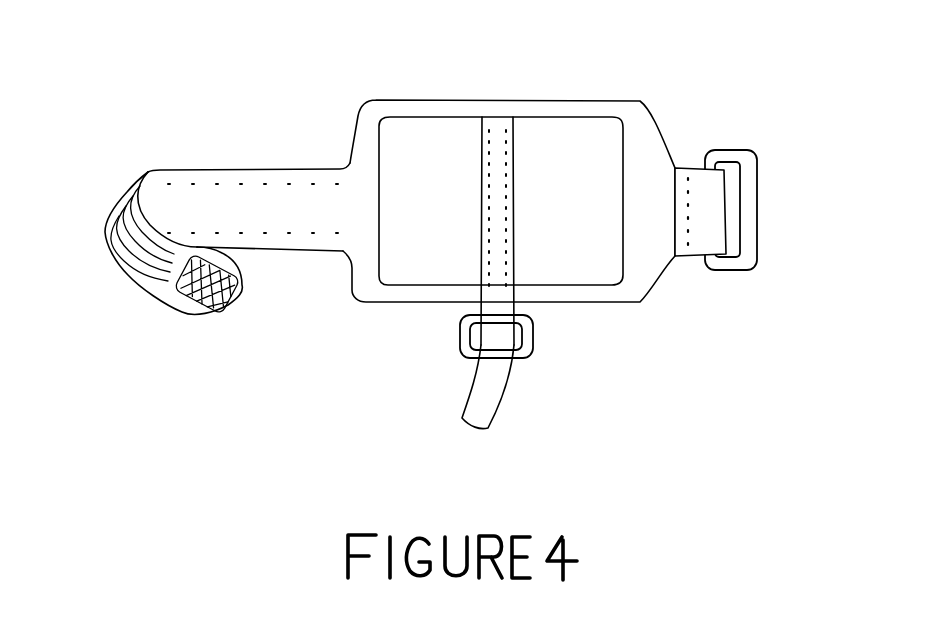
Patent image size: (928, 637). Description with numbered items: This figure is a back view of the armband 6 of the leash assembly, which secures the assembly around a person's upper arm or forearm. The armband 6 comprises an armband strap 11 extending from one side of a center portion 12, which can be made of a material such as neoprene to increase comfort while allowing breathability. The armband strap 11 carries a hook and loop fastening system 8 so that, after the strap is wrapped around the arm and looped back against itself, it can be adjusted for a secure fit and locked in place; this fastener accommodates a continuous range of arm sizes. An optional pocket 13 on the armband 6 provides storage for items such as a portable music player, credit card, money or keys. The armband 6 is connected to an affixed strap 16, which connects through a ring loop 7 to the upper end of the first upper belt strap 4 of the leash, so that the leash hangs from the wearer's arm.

The first upper belt strap 4 is at (521, 416).
The armband 6 is at (359, 312).
The ring loop 7 is at (547, 341).
The hook and loop fastening system 8 is at (114, 197).
The armband strap 11 is at (260, 158).
The center portion 12 is at (562, 127).
The pocket 13 is at (753, 134).
The affixed strap 16 is at (479, 144).